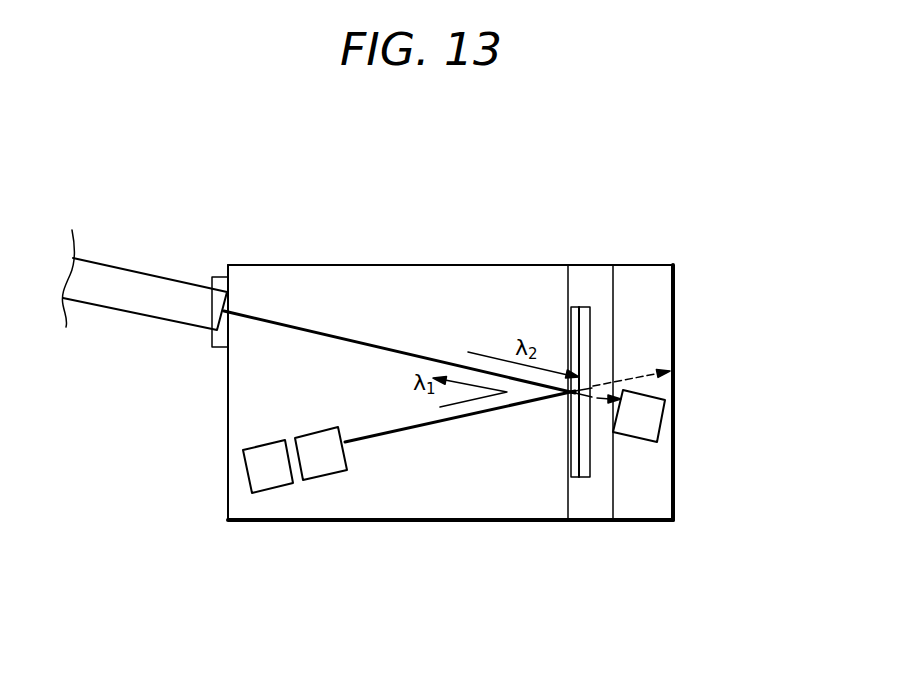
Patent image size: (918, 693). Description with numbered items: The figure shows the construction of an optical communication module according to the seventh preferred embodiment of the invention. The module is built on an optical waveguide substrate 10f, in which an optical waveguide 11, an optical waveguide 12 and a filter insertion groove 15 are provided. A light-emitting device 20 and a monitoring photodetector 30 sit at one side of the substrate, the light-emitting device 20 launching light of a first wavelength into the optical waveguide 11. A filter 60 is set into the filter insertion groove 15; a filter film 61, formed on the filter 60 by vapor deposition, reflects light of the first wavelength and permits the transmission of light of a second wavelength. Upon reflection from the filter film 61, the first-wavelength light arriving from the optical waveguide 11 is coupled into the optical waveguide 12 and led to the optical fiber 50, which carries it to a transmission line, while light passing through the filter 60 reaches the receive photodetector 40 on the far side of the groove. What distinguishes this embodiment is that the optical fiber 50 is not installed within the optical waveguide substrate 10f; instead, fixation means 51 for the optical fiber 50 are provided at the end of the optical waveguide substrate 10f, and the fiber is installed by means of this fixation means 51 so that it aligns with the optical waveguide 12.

The optical waveguide substrate 10f is at (368, 264).
The optical fiber 50 is at (163, 279).
The fixation means 51 is at (215, 345).
The optical waveguide 12 is at (455, 362).
The optical waveguide 11 is at (440, 423).
The light-emitting device 20 is at (325, 477).
The monitoring photodetector 30 is at (253, 490).
The filter insertion groove 15 is at (594, 510).
The filter 60 is at (588, 304).
The filter film 61 is at (579, 306).
The receive photodetector 40 is at (662, 420).